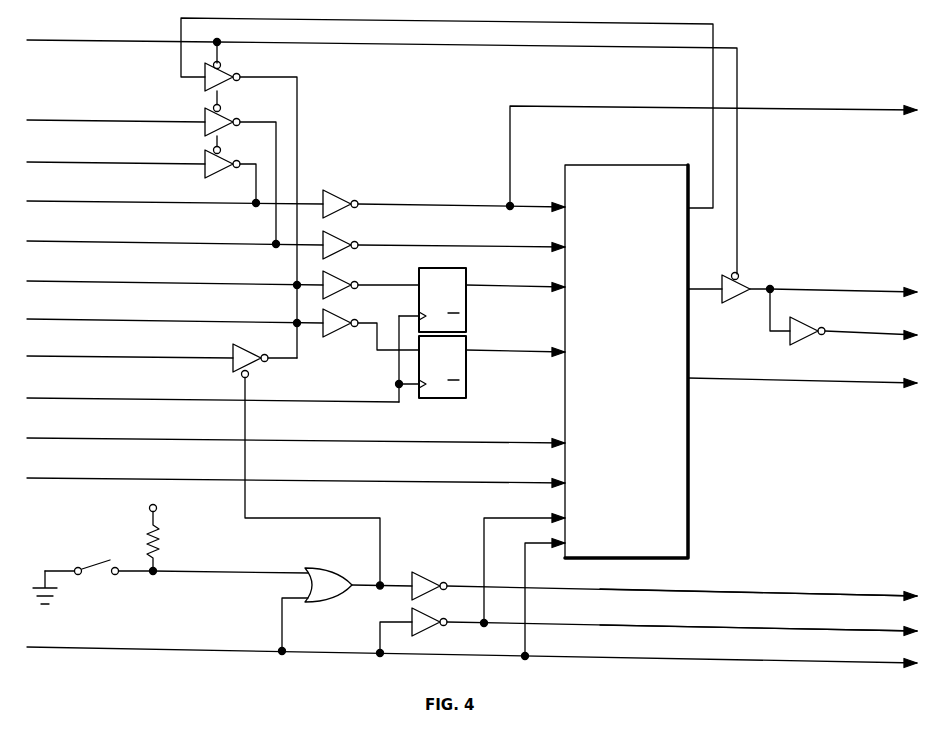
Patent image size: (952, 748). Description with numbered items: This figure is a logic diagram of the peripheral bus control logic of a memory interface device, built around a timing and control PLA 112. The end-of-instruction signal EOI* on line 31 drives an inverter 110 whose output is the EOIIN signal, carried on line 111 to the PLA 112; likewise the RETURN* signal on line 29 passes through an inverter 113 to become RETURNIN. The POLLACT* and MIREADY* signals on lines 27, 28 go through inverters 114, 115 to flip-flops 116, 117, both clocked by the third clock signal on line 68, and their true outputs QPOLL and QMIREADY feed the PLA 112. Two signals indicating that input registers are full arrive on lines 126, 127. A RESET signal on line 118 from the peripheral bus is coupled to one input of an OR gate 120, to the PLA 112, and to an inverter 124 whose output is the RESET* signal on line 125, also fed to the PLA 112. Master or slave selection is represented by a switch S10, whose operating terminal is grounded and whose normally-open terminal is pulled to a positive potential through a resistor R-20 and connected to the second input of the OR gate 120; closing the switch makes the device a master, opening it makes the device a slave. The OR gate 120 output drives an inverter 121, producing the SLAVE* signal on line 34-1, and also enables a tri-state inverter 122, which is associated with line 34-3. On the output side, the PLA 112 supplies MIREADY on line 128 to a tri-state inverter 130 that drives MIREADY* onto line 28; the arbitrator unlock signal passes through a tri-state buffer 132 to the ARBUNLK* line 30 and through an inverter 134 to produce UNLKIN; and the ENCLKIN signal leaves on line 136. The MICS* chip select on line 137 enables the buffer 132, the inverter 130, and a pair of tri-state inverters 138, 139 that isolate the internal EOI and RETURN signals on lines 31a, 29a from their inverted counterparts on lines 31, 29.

The MICS* line 137 is at (150, 39).
The MIREADY line 128 is at (531, 18).
The tri-state inverter 130 is at (234, 69).
The tri-state inverter 139 is at (234, 109).
The tri-state inverter 138 is at (234, 151).
The internal RETURN line 29a is at (124, 120).
The internal EOI line 31a is at (150, 161).
The EOI* line 31 is at (140, 200).
The RETURN* line 29 is at (163, 240).
The MIREADY* line 28 is at (165, 280).
The POLLACT* line 27 is at (165, 318).
The line 34-3 is at (180, 356).
The CLK 3 line 68 is at (140, 397).
The input register full line 126 is at (174, 437).
The input register full line 127 is at (174, 477).
The inverter 110 is at (343, 188).
The inverter 113 is at (343, 229).
The inverter 115 is at (343, 269).
The inverter 114 is at (343, 309).
The flip-flop 117 is at (468, 297).
The flip-flop 116 is at (468, 365).
The tri-state inverter 122 is at (257, 372).
The timing and control PLA 112 is at (612, 428).
The EOIIN line 111 is at (837, 108).
The ARBUNLK* line 30 is at (791, 280).
The tri-state buffer 132 is at (749, 293).
The inverter 134 is at (803, 344).
The ENCLKIN line 136 is at (812, 381).
The switch S10 is at (98, 561).
The resistor R-20 is at (161, 531).
The OR gate 120 is at (320, 598).
The inverter 121 is at (431, 568).
The SLAVE* line 34-1 is at (771, 594).
The inverter 124 is at (436, 630).
The RESET* line 125 is at (773, 629).
The RESET line 118 is at (154, 647).